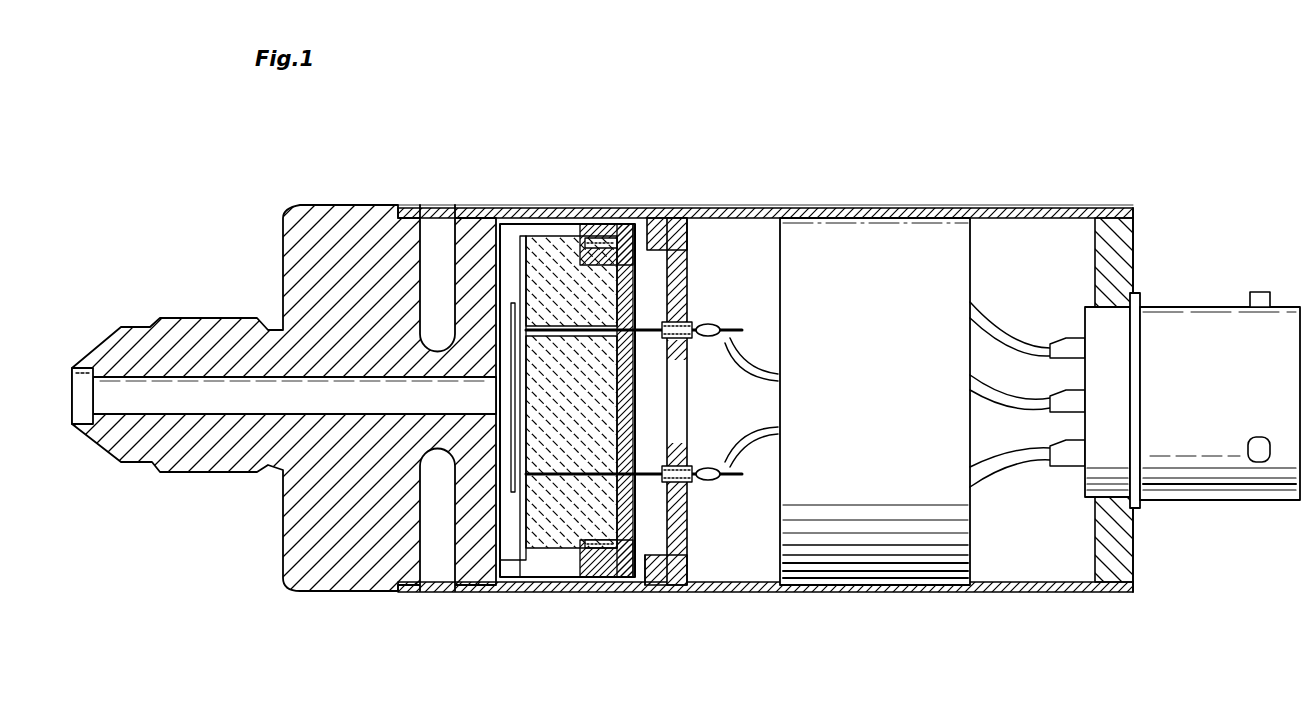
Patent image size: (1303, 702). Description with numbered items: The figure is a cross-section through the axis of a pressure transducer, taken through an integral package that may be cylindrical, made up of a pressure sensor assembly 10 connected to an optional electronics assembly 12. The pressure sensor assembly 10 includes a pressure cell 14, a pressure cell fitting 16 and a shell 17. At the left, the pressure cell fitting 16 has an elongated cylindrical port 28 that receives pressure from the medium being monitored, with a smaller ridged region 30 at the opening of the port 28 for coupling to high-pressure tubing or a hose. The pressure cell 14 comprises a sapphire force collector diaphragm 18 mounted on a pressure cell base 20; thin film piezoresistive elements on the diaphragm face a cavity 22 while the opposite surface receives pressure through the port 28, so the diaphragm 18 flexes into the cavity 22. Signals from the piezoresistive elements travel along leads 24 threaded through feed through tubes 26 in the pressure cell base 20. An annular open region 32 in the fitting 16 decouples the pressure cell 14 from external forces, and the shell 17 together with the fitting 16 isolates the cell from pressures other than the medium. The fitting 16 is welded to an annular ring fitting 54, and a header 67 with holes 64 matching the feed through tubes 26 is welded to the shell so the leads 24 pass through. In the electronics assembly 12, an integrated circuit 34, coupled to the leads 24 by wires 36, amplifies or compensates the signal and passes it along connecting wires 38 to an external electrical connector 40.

The pressure sensor assembly 10 is at (569, 167).
The electronics assembly 12 is at (882, 197).
The pressure cell 14 is at (515, 548).
The pressure cell fitting 16 is at (302, 572).
The shell 17 is at (500, 262).
The sapphire force collector diaphragm 18 is at (513, 303).
The pressure cell base 20 is at (563, 250).
The cavity 22 is at (560, 450).
The leads 24 is at (615, 472).
The feed through tubes 26 is at (575, 328).
The port 28 is at (228, 392).
The ridged region 30 is at (213, 463).
The annular open region 32 is at (432, 565).
The integrated circuit 34 is at (875, 401).
The wires 36 is at (753, 358).
The connecting wires 38 is at (1000, 393).
The external electrical connector 40 is at (1178, 323).
The annular ring fitting 54 is at (643, 222).
The holes 64 is at (690, 482).
The header 67 is at (688, 556).